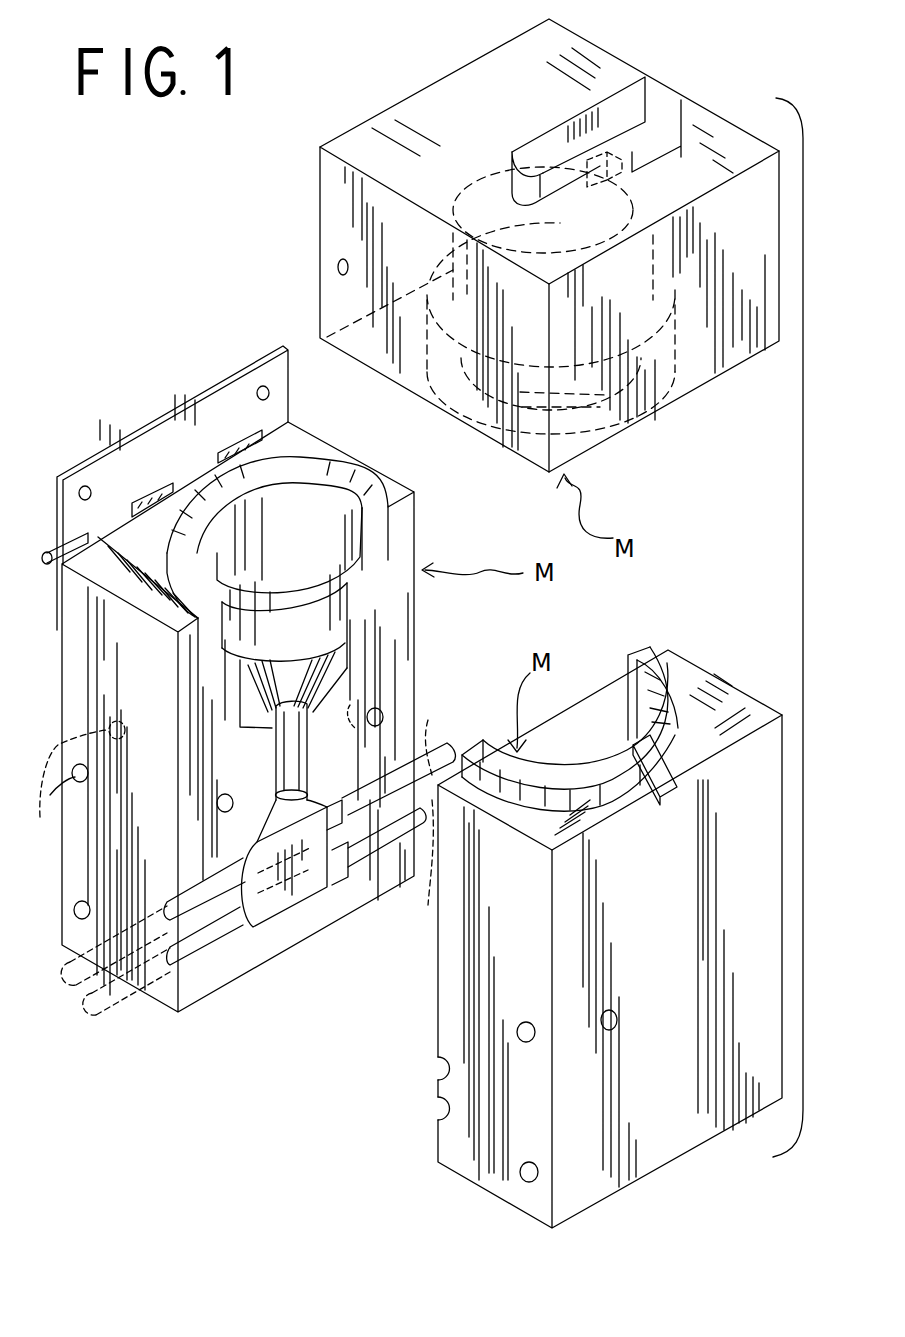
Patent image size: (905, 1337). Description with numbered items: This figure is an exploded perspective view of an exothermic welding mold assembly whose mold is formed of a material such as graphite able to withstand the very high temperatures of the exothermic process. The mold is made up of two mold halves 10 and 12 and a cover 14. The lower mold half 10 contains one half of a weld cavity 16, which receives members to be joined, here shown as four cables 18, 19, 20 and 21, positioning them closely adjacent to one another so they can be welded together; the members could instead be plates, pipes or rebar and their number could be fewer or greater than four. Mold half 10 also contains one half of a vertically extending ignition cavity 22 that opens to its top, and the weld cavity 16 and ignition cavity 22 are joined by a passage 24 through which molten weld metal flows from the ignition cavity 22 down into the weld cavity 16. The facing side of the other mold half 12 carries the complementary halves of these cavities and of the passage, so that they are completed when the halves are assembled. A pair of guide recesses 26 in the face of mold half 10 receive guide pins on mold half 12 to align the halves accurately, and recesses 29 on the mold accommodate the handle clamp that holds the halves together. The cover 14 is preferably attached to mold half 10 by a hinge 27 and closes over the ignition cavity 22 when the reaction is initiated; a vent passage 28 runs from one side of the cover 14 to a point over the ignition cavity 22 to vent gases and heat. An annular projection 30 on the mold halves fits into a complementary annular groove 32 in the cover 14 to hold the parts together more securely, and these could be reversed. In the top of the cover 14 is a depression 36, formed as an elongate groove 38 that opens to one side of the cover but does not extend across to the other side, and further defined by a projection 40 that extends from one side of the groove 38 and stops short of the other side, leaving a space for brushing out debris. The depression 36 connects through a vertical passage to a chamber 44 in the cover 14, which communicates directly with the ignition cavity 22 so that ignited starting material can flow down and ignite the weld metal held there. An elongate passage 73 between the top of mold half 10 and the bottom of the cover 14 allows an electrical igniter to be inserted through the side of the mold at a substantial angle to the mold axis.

The mold half 10 is at (397, 480).
The mold half 12 is at (722, 673).
The cover 14 is at (325, 223).
The weld cavity 16 is at (300, 907).
The cable 18 is at (62, 957).
The cable 19 is at (432, 755).
The cable 20 is at (122, 1002).
The cable 21 is at (425, 878).
The ignition cavity 22 is at (333, 637).
The passage 24 is at (277, 762).
The guide recess 26 is at (380, 710).
The hinge 27 is at (148, 443).
The vent passage 28 is at (667, 172).
The recess 29 is at (80, 902).
The annular projection 30 is at (187, 550).
The annular groove 32 is at (460, 370).
The depression 36 is at (540, 143).
The elongate groove 38 is at (638, 100).
The projection 40 is at (612, 150).
The chamber 44 is at (582, 344).
The elongate passage 73 is at (667, 797).